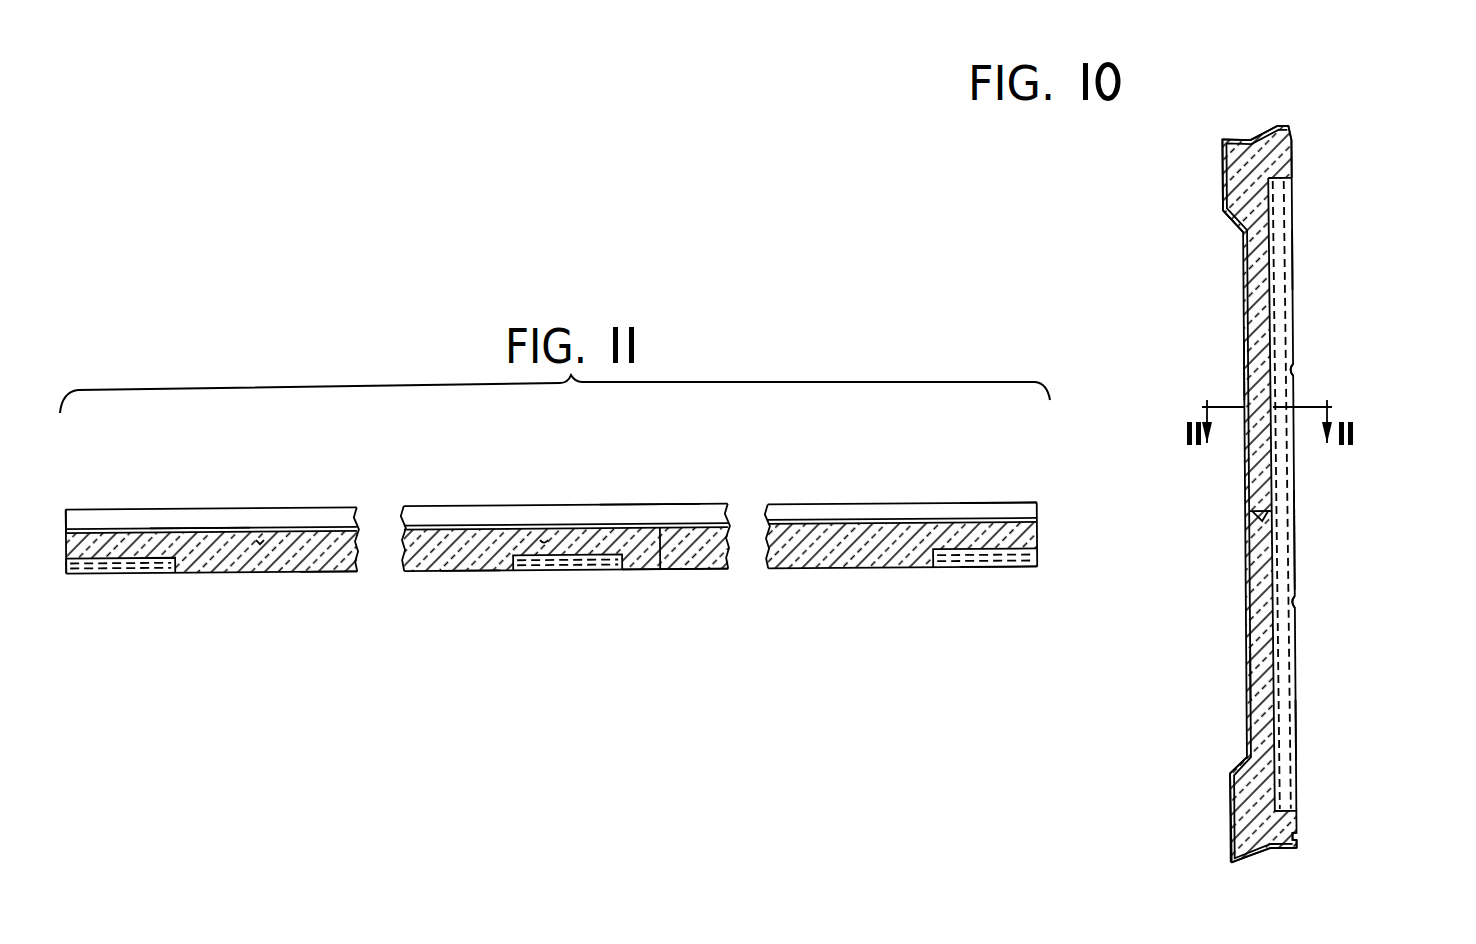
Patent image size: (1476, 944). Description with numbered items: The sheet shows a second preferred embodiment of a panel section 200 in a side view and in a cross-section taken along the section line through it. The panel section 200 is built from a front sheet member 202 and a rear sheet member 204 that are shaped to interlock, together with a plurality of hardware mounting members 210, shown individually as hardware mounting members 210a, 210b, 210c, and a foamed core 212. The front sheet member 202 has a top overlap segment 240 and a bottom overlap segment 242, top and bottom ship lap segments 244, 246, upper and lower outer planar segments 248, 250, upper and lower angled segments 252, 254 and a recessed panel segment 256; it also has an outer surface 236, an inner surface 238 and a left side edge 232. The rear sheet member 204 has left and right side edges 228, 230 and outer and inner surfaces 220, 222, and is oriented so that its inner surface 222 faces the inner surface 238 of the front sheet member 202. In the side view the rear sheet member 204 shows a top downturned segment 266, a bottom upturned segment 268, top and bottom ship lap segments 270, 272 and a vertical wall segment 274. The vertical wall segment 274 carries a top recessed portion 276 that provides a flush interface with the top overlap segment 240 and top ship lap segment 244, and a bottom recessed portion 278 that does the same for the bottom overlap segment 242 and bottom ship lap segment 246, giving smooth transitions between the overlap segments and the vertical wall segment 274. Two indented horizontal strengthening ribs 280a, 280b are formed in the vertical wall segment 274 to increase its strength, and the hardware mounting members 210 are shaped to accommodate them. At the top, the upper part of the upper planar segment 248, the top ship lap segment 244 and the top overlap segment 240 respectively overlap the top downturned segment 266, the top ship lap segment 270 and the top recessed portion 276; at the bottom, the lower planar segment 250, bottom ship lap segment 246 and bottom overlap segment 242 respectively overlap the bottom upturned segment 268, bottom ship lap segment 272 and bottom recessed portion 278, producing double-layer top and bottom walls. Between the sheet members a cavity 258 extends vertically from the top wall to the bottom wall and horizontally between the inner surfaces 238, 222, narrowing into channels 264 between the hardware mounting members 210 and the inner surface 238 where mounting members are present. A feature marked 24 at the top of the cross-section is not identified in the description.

In FIG. 10, the panel section 200 is at (1405, 215).
In FIG. 11, the panel section 200 is at (878, 436).
In FIG. 10, the front sheet member 202 is at (1232, 310).
In FIG. 11, the front sheet member 202 is at (883, 505).
In FIG. 10, the rear sheet member 204 is at (1306, 321).
In FIG. 11, the rear sheet member 204 is at (875, 577).
In FIG. 10, the hardware mounting members 210 is at (1291, 732).
In FIG. 11, the hardware mounting member 210a is at (987, 558).
In FIG. 11, the hardware mounting member 210b is at (563, 565).
In FIG. 11, the hardware mounting member 210c is at (157, 568).
In FIG. 10, the foamed core 212 is at (1263, 676).
In FIG. 11, the foamed core 212 is at (322, 561).
In FIG. 10, the outer surface 220 is at (1298, 557).
In FIG. 11, the outer surface 220 is at (647, 569).
In FIG. 10, the inner surface 222 is at (1295, 514).
In FIG. 11, the inner surface 222 is at (680, 563).
In FIG. 11, the board top surface 24 is at (67, 511).
In FIG. 11, the left side edge 228 is at (1038, 567).
In FIG. 11, the right side edge 230 is at (66, 565).
In FIG. 11, the left side edge 232 is at (1038, 507).
In FIG. 10, the outer surface 236 is at (1245, 488).
In FIG. 11, the outer surface 236 is at (195, 527).
In FIG. 10, the inner surface 238 is at (1253, 518).
In FIG. 11, the inner surface 238 is at (260, 540).
In FIG. 10, the top overlap segment 240 is at (1295, 141).
In FIG. 10, the bottom overlap segment 242 is at (1299, 836).
In FIG. 10, the top ship lap segment 244 is at (1267, 126).
In FIG. 10, the bottom ship lap segment 246 is at (1267, 857).
In FIG. 10, the upper outer planar segment 248 is at (1222, 185).
In FIG. 10, the lower outer planar segment 250 is at (1229, 802).
In FIG. 10, the upper angled segment 252 is at (1236, 222).
In FIG. 10, the lower angled segment 254 is at (1240, 767).
In FIG. 11, the lower angled segment 254 is at (647, 518).
In FIG. 10, the recessed panel segment 256 is at (1247, 372).
In FIG. 11, the cavity 258 is at (468, 550).
In FIG. 11, the channels 264 is at (548, 537).
In FIG. 10, the top downturned segment 266 is at (1222, 150).
In FIG. 10, the bottom upturned segment 268 is at (1238, 853).
In FIG. 10, the top ship lap segment 270 is at (1253, 140).
In FIG. 10, the bottom ship lap segment 272 is at (1291, 857).
In FIG. 10, the vertical wall segment 274 is at (1294, 258).
In FIG. 10, the top recessed portion 276 is at (1290, 128).
In FIG. 10, the bottom recessed portion 278 is at (1301, 843).
In FIG. 10, the indented horizontal strengthening rib 280a is at (1293, 368).
In FIG. 10, the indented horizontal strengthening rib 280b is at (1293, 602).